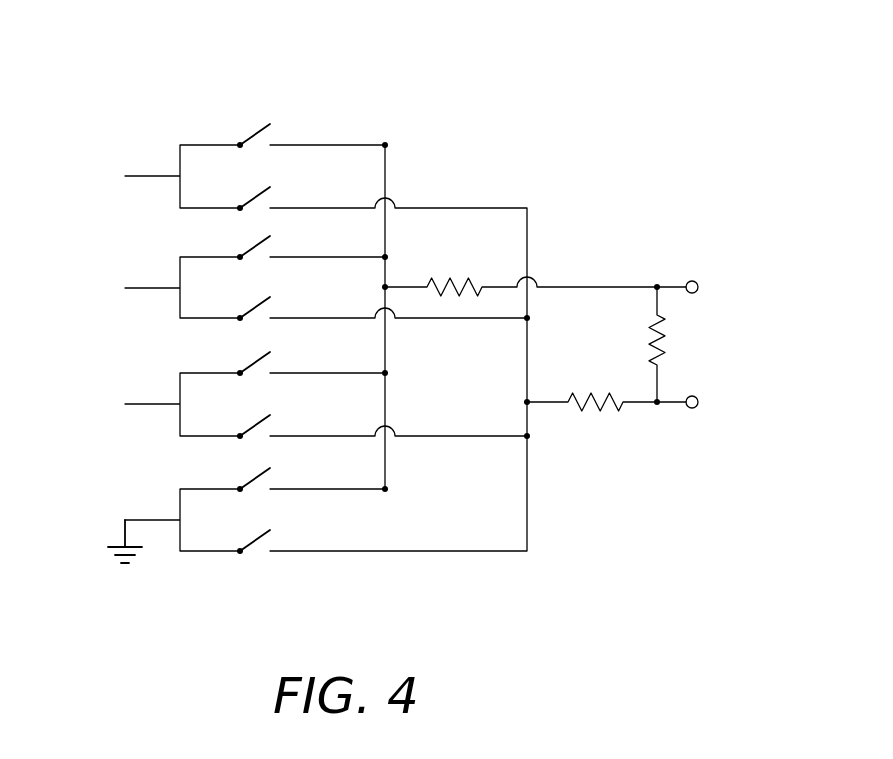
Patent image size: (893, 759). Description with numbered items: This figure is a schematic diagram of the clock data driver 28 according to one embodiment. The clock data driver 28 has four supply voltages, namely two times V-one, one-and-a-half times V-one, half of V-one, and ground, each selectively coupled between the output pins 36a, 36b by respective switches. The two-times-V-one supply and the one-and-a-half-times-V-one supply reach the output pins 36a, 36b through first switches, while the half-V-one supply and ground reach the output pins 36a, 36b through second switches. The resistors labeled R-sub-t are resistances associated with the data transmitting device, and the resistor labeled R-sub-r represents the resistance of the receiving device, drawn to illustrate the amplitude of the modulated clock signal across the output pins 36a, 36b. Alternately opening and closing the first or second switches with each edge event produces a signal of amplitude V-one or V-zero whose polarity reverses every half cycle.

The clock data driver 28 is at (505, 80).
The output pin 36a is at (697, 282).
The output pin 36b is at (697, 397).